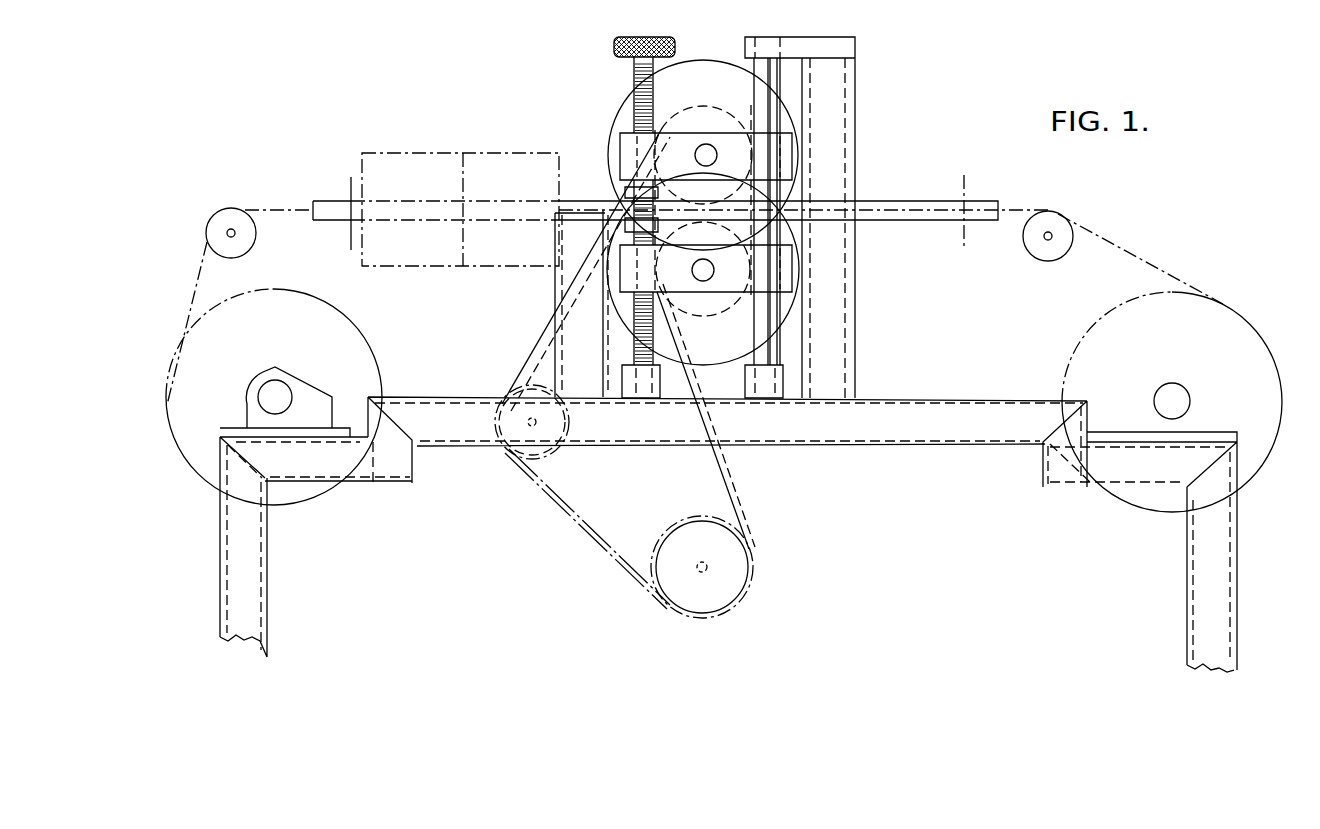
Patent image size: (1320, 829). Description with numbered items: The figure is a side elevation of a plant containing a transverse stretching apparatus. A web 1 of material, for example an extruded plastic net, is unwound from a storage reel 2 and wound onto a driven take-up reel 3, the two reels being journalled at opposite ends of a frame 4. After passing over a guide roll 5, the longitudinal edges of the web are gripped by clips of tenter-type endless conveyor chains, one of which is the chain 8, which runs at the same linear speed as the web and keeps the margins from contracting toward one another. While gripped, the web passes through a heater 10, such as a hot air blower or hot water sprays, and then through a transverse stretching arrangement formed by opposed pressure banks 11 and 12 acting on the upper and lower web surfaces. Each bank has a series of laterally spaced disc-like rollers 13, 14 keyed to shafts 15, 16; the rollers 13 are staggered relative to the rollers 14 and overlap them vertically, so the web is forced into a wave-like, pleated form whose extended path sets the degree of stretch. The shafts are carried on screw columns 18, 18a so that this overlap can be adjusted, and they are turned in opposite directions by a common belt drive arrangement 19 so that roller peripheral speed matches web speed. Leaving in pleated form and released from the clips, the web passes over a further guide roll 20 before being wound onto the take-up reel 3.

The web 1 is at (274, 208).
The storage reel 2 is at (192, 455).
The take-up reel 3 is at (1264, 450).
The frame 4 is at (877, 430).
The guide roll 5 is at (241, 215).
The endless conveyor chain 8 is at (333, 200).
The heater 10 is at (387, 163).
The pressure bank 11 is at (605, 154).
The pressure bank 12 is at (798, 317).
The roller 13 is at (617, 117).
The roller 14 is at (742, 352).
The shaft 15 is at (706, 150).
The shaft 16 is at (706, 276).
The screw column 18 is at (632, 80).
The screw column 18a is at (768, 83).
The belt drive arrangement 19 is at (570, 513).
The guide roll 20 is at (1044, 240).